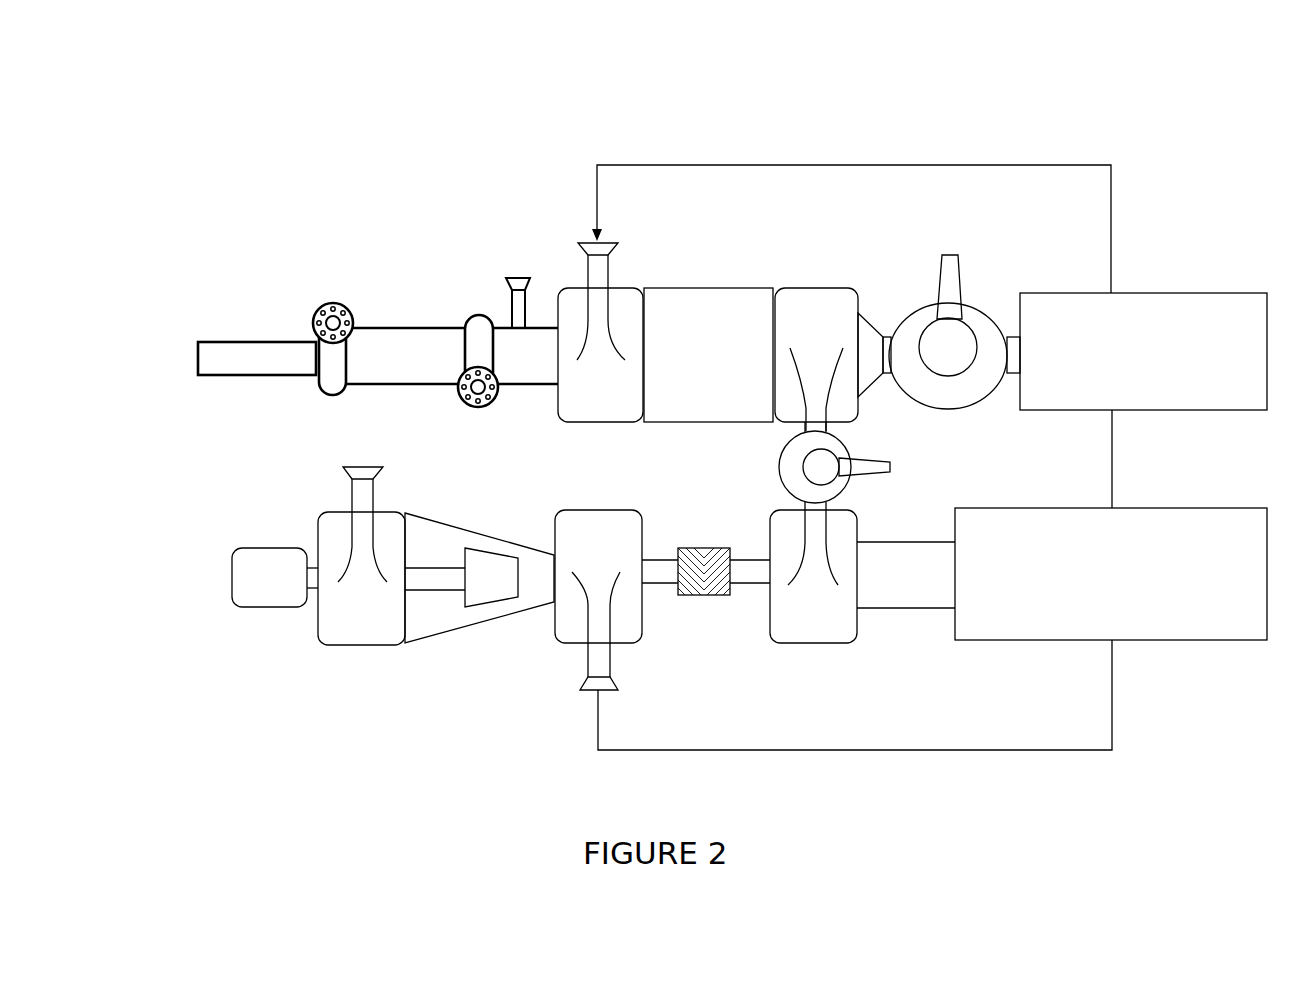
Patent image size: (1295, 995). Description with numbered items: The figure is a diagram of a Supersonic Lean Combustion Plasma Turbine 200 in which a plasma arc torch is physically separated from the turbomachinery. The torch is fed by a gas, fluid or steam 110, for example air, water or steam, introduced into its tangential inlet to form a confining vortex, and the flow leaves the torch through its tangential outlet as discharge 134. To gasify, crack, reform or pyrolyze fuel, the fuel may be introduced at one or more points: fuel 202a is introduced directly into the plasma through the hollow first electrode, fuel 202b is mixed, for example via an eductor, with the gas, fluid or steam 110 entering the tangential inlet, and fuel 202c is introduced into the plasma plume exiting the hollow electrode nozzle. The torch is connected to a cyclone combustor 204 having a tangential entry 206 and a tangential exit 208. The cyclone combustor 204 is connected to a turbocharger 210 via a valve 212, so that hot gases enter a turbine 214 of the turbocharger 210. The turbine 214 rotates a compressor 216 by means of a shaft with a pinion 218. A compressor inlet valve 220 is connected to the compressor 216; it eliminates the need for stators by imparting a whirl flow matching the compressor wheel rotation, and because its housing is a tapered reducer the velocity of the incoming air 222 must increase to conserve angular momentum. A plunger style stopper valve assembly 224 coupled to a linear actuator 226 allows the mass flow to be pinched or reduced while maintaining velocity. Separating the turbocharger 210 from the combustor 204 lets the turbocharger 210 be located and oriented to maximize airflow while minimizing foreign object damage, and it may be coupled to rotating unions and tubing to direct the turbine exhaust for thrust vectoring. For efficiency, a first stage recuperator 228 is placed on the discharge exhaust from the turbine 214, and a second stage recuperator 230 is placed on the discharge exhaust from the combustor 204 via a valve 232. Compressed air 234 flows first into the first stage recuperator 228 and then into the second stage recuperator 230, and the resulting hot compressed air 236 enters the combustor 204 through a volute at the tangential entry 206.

The Supersonic Lean Combustion Plasma Turbine 200 is at (1100, 90).
The fuel 202a is at (170, 352).
The fuel 202b is at (518, 256).
The fuel 202c is at (518, 270).
The gas, fluid or steam 110 is at (329, 275).
The discharge 134 is at (478, 413).
The cyclone combustor 204 is at (728, 362).
The tangential entry 206 is at (611, 257).
The tangential exit 208 is at (806, 412).
The turbocharger 210 is at (780, 530).
The valve 212 is at (846, 451).
The turbine 214 is at (820, 633).
The compressor 216 is at (623, 633).
The pinion 218 is at (720, 587).
The compressor inlet valve 220 is at (382, 621).
The air 222 is at (360, 456).
The plunger style stopper valve assembly 224 is at (478, 592).
The linear actuator 226 is at (275, 560).
The first stage recuperator 228 is at (1131, 587).
The second stage recuperator 230 is at (1131, 371).
The valve 232 is at (926, 322).
The compressed air 234 is at (855, 713).
The hot compressed air 236 is at (851, 215).